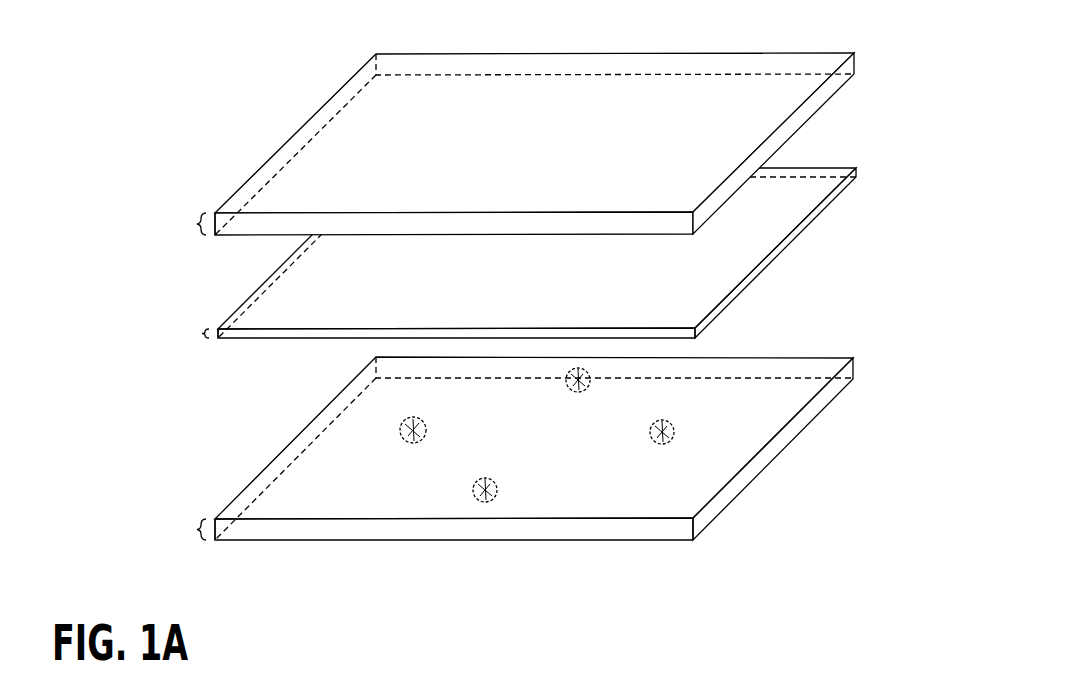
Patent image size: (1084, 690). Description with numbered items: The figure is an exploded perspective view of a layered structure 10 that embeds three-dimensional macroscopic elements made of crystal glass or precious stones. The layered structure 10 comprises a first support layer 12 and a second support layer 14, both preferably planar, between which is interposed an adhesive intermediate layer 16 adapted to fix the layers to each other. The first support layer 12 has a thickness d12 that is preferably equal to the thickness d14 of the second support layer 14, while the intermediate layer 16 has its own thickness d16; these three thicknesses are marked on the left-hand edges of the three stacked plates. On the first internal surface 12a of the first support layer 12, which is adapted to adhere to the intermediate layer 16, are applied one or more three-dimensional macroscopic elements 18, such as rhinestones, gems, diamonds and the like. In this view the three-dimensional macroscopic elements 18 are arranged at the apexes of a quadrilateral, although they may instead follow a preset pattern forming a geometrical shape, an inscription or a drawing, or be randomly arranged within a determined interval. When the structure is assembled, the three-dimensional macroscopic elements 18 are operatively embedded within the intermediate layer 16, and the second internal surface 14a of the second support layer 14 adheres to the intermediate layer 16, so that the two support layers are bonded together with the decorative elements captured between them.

The layered structure 10 is at (197, 85).
The first support layer 12 is at (757, 487).
The first internal surface 12a is at (753, 443).
The thickness of the first support layer d12 is at (195, 528).
The second support layer 14 is at (862, 62).
The second internal surface 14a is at (777, 152).
The thickness of the second support layer d14 is at (195, 223).
The adhesive intermediate layer 16 is at (788, 258).
The thickness of the intermediate layer d16 is at (203, 333).
The three-dimensional macroscopic elements 18 is at (652, 442).